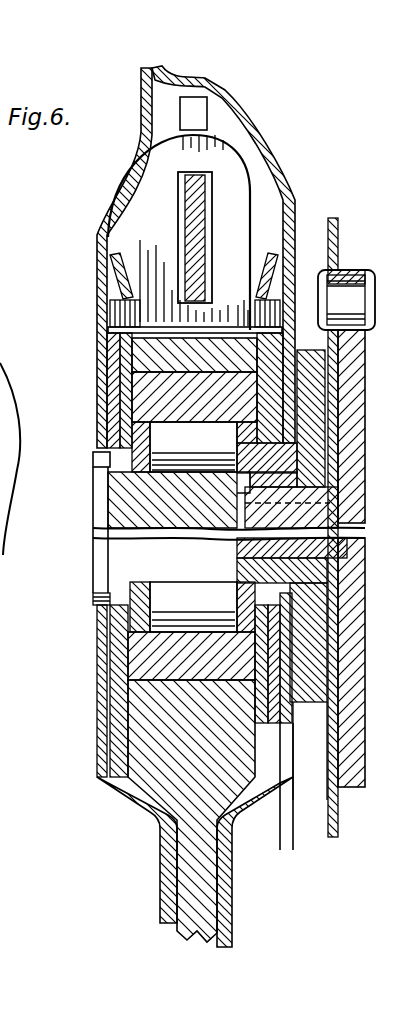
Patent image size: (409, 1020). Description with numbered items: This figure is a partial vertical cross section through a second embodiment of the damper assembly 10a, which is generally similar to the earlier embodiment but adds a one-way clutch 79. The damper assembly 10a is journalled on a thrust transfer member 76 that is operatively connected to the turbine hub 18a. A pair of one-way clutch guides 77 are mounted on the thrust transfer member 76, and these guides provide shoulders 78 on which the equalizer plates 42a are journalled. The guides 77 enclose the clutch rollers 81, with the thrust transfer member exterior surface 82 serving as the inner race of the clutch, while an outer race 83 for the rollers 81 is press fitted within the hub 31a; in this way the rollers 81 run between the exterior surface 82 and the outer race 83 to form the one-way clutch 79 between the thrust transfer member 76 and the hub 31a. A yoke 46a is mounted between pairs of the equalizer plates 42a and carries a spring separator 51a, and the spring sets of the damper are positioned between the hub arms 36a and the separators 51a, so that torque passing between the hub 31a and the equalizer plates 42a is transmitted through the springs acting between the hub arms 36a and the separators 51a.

The damper assembly 10a is at (289, 151).
The yoke 46a is at (147, 223).
The spring separator 51a is at (197, 213).
The hub 31a is at (105, 352).
The outer race 83 is at (120, 372).
The one-way clutch 79 is at (102, 413).
The shoulders 78 is at (99, 430).
The thrust transfer member 76 is at (97, 481).
The turbine hub 18a is at (357, 397).
The clutch rollers 81 is at (193, 460).
The thrust transfer member exterior surface 82 is at (98, 600).
The one-way clutch guides 77 is at (98, 605).
The equalizer plates 42a is at (105, 659).
The hub arms 36a is at (190, 853).